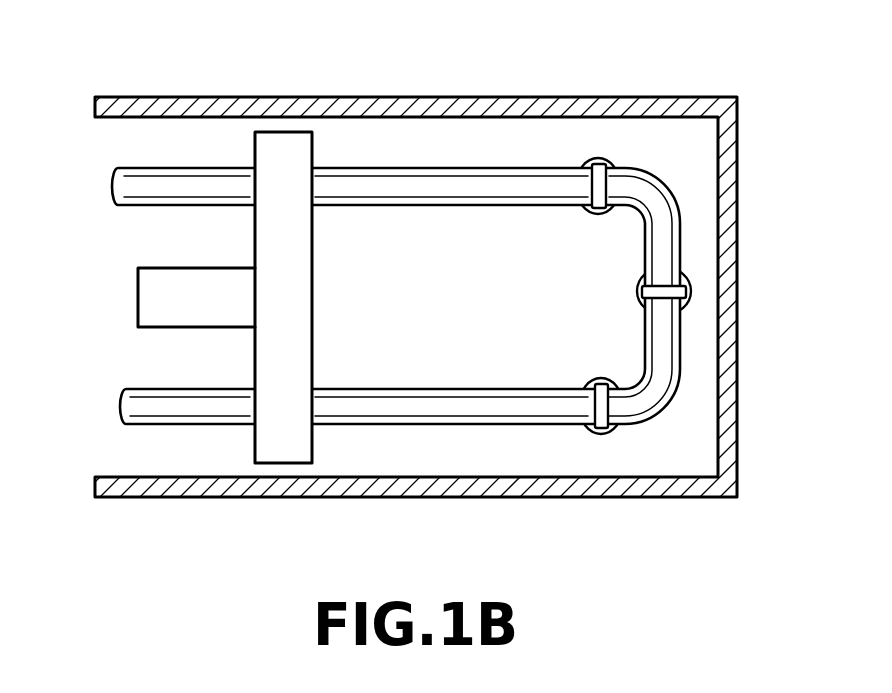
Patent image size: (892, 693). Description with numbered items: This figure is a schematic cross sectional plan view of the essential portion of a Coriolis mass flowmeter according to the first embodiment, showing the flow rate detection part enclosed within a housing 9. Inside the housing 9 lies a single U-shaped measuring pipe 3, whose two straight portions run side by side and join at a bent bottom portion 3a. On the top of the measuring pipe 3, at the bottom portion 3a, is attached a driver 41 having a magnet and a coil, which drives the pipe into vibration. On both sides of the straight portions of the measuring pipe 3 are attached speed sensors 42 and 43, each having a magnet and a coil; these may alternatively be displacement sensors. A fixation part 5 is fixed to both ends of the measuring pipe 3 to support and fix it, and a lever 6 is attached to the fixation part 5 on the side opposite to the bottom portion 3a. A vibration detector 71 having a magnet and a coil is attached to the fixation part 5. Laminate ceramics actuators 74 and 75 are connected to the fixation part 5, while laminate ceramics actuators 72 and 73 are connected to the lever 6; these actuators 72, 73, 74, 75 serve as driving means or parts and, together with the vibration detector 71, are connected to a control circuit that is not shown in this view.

The measuring pipe 3 is at (404, 184).
The bottom portion 3a is at (675, 221).
The fixation part 5 is at (280, 145).
The lever 6 is at (184, 280).
The housing 9 is at (521, 105).
The driver 41 is at (641, 294).
The sensor 42 is at (612, 433).
The sensor 43 is at (609, 161).
The vibration detector 71 is at (224, 349).
The actuator 72 is at (147, 349).
The actuator 73 is at (147, 349).
The actuator 74 is at (391, 294).
The actuator 75 is at (391, 294).